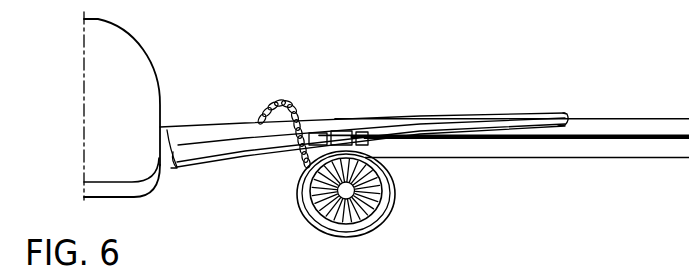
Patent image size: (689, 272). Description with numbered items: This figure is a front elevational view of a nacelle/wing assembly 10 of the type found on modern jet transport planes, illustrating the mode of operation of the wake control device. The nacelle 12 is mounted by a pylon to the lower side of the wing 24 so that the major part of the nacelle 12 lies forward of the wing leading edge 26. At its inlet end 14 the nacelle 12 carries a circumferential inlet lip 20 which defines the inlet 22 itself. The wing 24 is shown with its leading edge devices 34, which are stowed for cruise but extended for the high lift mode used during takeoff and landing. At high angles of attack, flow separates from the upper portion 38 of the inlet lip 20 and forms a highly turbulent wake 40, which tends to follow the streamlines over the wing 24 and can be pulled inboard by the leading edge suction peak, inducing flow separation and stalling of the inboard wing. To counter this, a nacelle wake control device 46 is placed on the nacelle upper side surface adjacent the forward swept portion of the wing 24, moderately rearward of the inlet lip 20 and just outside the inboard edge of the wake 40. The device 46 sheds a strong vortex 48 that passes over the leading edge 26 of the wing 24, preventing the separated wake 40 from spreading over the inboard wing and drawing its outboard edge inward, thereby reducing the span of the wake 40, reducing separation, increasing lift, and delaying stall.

The nacelle/wing assembly 10 is at (241, 204).
The nacelle 12 is at (321, 242).
The inlet end 14 is at (374, 216).
The inlet lip 20 is at (395, 188).
The inlet 22 is at (314, 208).
The wing 24 is at (364, 112).
The leading edge 26 is at (425, 117).
The leading edge devices 34 is at (488, 128).
The upper portion of the inlet lip 38 is at (378, 140).
The turbulent wake 40 is at (330, 111).
The nacelle wake control device 46 is at (310, 166).
The vortex 48 is at (276, 103).